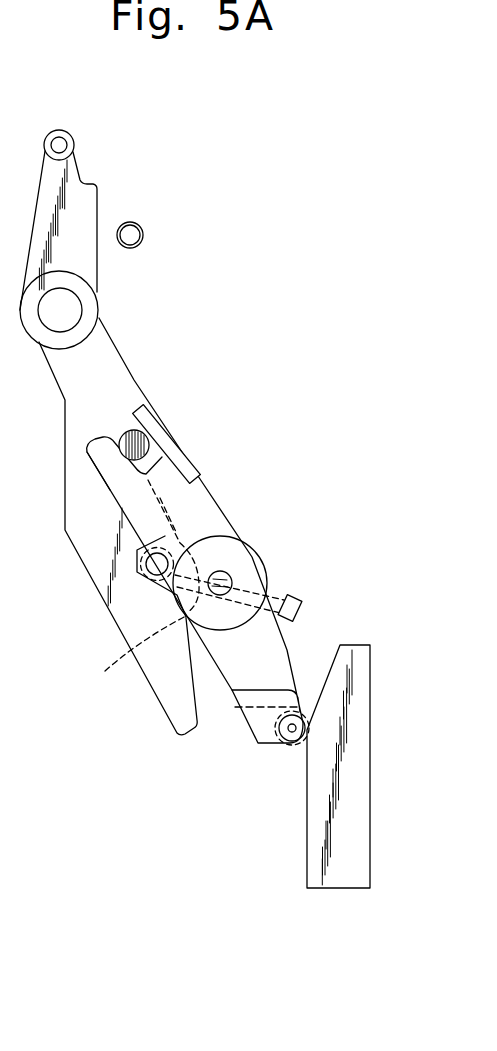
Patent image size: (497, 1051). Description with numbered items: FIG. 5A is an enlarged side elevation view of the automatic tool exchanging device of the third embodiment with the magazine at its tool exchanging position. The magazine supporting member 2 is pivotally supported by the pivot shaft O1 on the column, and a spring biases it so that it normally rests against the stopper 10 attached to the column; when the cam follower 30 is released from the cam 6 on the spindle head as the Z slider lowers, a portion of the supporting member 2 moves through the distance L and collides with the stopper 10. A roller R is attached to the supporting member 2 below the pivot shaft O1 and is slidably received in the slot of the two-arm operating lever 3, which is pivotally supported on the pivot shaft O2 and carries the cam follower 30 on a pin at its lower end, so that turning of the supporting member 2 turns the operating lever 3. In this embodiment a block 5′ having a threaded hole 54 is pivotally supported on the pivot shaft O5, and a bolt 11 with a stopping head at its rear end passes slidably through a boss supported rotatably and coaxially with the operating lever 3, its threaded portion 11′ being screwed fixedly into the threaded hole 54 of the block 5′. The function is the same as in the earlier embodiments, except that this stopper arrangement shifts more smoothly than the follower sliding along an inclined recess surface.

The magazine supporting member 2 is at (68, 497).
The operating lever 3 is at (203, 492).
The block 5′ is at (138, 574).
The cam 6 is at (358, 792).
The stopper 10 is at (143, 236).
The bolt 11 is at (270, 576).
The threaded portion 11′ is at (137, 649).
The cam follower 30 is at (291, 745).
The threaded hole 54 is at (187, 540).
The pivot shaft O1 is at (68, 308).
The pivot shaft O2 is at (228, 577).
The pivot shaft O5 is at (146, 564).
The distance L is at (117, 230).
The roller R is at (145, 444).